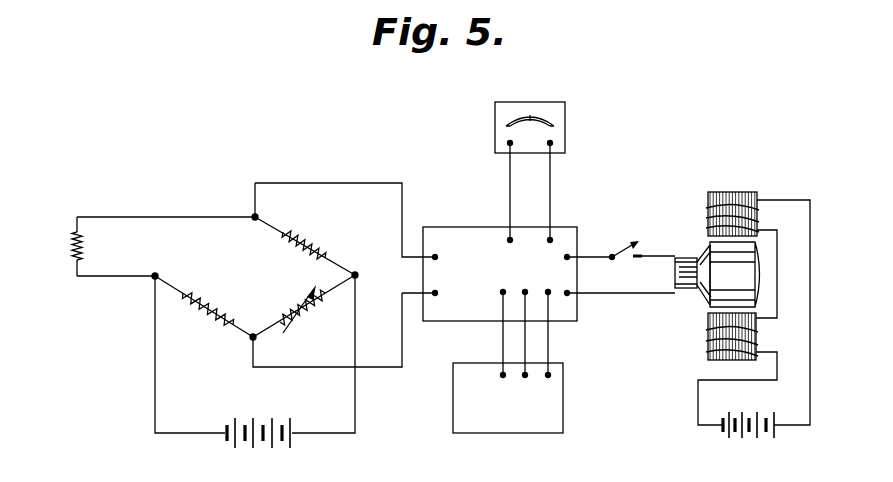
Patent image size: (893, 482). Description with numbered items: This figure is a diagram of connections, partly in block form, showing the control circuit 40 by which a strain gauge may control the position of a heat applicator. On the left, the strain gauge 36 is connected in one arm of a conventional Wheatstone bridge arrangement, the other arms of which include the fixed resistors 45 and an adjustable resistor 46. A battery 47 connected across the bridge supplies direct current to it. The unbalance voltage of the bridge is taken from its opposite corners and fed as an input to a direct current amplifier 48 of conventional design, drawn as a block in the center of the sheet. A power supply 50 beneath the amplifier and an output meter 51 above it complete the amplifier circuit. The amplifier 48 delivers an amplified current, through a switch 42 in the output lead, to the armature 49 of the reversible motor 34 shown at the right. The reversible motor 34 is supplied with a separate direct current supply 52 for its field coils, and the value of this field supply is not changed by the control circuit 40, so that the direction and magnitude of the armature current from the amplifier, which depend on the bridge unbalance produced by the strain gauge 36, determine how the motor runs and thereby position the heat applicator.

The reversible motor 34 is at (686, 206).
The strain gauge 36 is at (75, 256).
The control circuit 40 is at (384, 160).
The switch 42 is at (616, 251).
The fixed resistor 45 is at (316, 250).
The adjustable resistor 46 is at (312, 320).
The battery 47 is at (253, 449).
The direct current amplifier 48 is at (480, 233).
The armature 49 is at (700, 290).
The power supply 50 is at (563, 424).
The output meter 51 is at (565, 141).
The direct current supply 52 is at (730, 435).